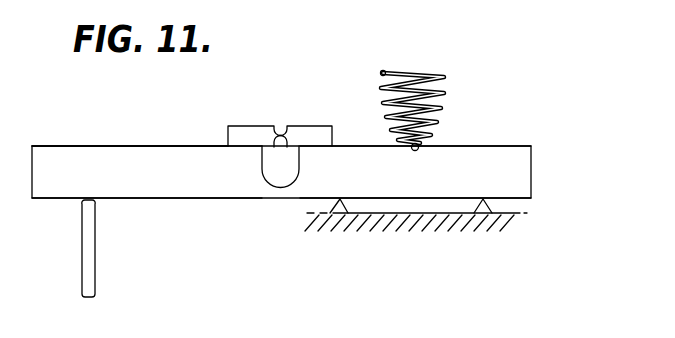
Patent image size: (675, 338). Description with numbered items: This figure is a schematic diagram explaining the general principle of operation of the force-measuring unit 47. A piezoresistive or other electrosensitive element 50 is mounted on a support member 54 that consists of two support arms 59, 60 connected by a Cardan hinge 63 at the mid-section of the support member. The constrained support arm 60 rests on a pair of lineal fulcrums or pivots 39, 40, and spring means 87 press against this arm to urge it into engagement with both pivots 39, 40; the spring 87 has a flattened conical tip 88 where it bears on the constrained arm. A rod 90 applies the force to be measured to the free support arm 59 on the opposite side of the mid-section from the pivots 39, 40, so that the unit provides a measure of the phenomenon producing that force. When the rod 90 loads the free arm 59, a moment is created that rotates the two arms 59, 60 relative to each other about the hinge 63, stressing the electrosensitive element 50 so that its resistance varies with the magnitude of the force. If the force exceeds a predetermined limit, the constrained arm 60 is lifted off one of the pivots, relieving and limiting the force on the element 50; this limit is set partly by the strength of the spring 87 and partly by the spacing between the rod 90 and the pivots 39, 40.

The lineal fulcrum or pivot 39 is at (493, 205).
The lineal fulcrum or pivot 40 is at (340, 201).
The unit 47 is at (181, 201).
The piezoresistive or other electrosensitive element 50 is at (328, 108).
The support member 54 is at (197, 137).
The free support arm 59 is at (167, 183).
The constrained support arm 60 is at (455, 185).
The Cardan hinge 63 is at (280, 189).
The spring means 87 is at (445, 88).
The flattened conical tip 88 is at (420, 146).
The rod 90 is at (83, 263).